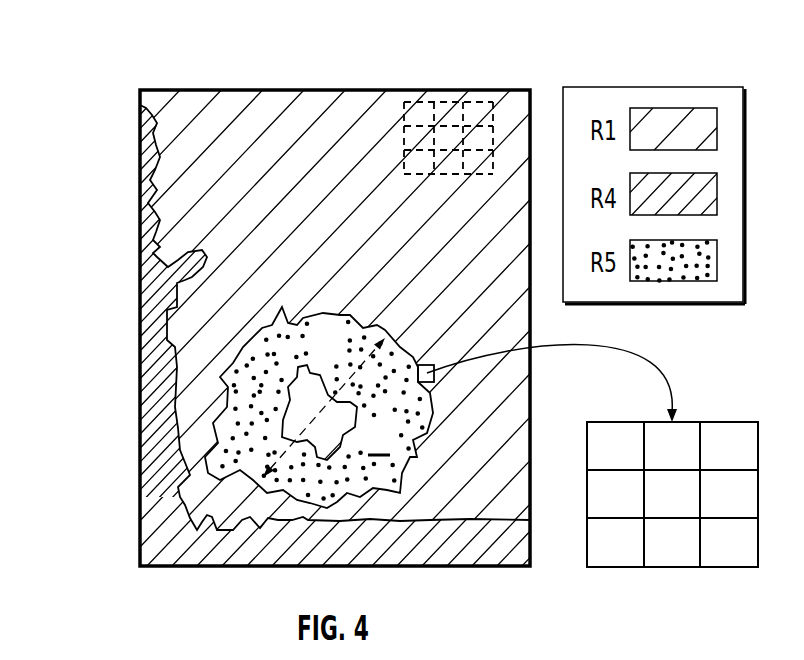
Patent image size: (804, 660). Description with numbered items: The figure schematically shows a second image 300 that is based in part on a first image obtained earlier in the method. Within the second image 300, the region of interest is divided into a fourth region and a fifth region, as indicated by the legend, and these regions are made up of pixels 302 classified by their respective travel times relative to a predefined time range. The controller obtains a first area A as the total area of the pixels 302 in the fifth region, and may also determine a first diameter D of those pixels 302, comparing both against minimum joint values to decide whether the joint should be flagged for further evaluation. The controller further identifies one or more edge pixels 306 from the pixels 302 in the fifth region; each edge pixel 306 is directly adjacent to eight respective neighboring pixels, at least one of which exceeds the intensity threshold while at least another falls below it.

The second image 300 is at (129, 20).
The pixels 302 is at (486, 106).
The edge pixel 306 is at (653, 498).